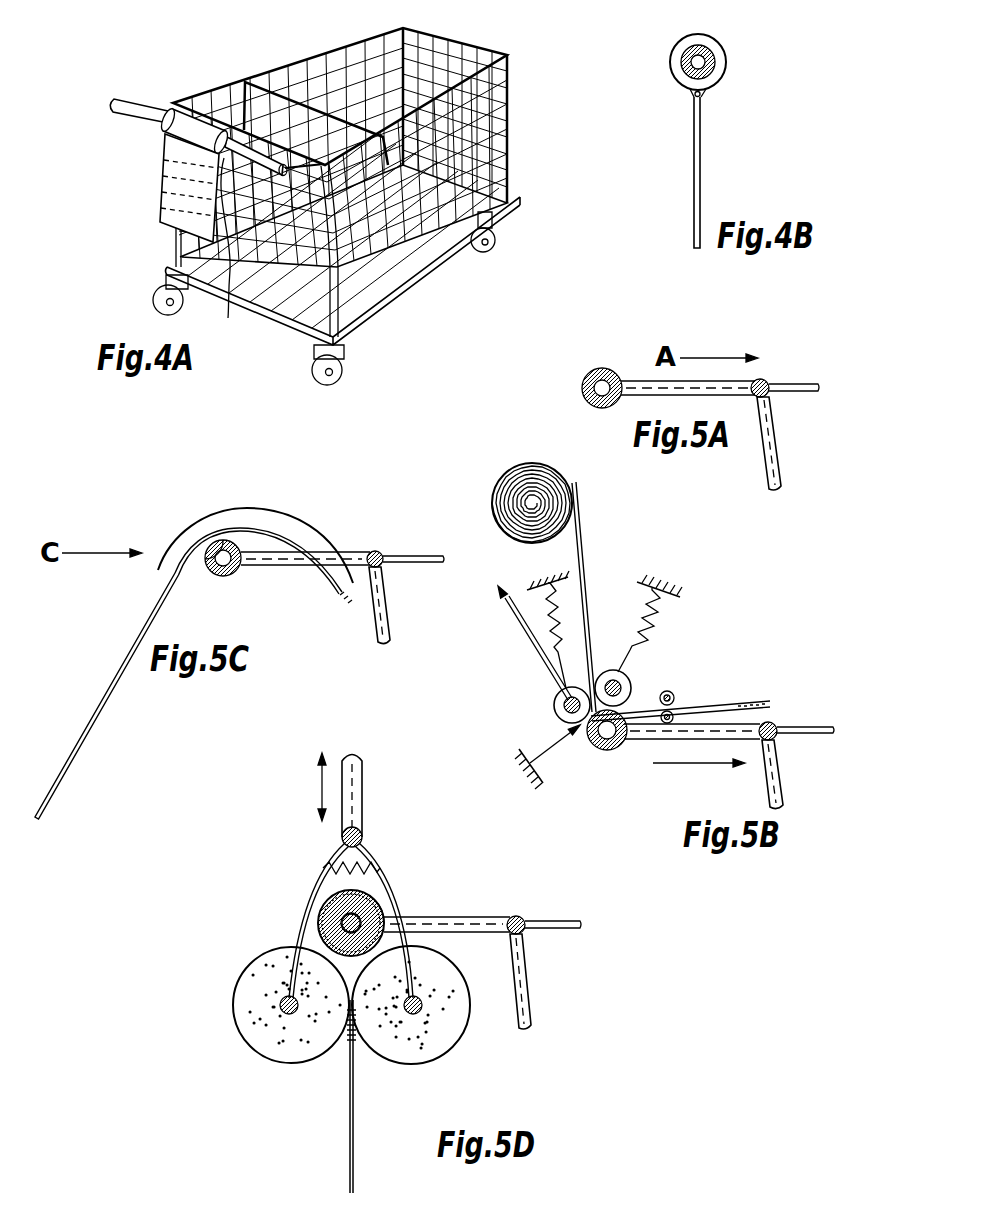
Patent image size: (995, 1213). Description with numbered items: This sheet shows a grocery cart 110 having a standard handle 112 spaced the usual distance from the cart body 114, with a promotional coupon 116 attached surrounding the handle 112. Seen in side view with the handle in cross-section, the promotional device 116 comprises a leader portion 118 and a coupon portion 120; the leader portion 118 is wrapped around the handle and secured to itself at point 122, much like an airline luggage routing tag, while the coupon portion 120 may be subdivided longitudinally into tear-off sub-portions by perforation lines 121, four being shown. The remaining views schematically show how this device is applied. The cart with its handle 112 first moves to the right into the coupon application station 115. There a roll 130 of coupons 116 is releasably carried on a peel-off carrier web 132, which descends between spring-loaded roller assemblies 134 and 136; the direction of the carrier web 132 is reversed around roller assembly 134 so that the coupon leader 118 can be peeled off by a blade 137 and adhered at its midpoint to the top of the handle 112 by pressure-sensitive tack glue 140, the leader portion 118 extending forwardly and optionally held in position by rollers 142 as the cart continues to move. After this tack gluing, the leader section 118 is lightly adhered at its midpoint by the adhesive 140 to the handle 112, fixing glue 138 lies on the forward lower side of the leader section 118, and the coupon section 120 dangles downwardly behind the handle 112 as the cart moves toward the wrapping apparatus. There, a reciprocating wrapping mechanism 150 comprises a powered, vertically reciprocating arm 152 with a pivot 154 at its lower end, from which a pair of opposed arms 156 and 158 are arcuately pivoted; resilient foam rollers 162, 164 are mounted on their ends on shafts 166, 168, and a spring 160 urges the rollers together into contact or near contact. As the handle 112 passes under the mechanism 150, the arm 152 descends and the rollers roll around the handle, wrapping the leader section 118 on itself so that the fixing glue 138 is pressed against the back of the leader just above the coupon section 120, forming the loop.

In FIG. 4A, the grocery cart 110 is at (488, 30).
In FIG. 4A, the handle 112 is at (110, 97).
In FIG. 4B, the handle 112 is at (712, 48).
In FIG. 5A, the handle 112 is at (588, 374).
In FIG. 5B, the handle 112 is at (608, 751).
In FIG. 5C, the handle 112 is at (225, 577).
In FIG. 5D, the handle 112 is at (318, 922).
In FIG. 4A, the cart body 114 is at (250, 68).
In FIG. 5A, the cart body 114 is at (775, 413).
In FIG. 5B, the cart body 114 is at (780, 751).
In FIG. 5C, the cart body 114 is at (388, 585).
In FIG. 5D, the cart body 114 is at (528, 946).
In FIG. 5B, the coupon application station 115 is at (624, 548).
In FIG. 4A, the promotional coupon 116 is at (156, 235).
In FIG. 4B, the promotional coupon 116 is at (743, 77).
In FIG. 4A, the leader portion 118 is at (166, 130).
In FIG. 4B, the leader portion 118 is at (663, 35).
In FIG. 5B, the leader portion 118 is at (693, 705).
In FIG. 5C, the leader portion 118 is at (247, 509).
In FIG. 4A, the coupon portion 120 is at (157, 148).
In FIG. 4B, the coupon portion 120 is at (683, 107).
In FIG. 5B, the coupon portion 120 is at (585, 545).
In FIG. 5C, the coupon portion 120 is at (160, 571).
In FIG. 5D, the coupon portion 120 is at (356, 1040).
In FIG. 4A, the perforation lines 121 is at (228, 306).
In FIG. 4B, the securing point 122 is at (703, 98).
In FIG. 5B, the roll of coupons 130 is at (497, 493).
In FIG. 5B, the peel-off carrier web 132 is at (537, 677).
In FIG. 5B, the spring-loaded roller assembly 134 is at (560, 632).
In FIG. 5B, the spring-loaded roller assembly 136 is at (645, 603).
In FIG. 5B, the blade 137 is at (550, 750).
In FIG. 5B, the fixing glue 138 is at (766, 709).
In FIG. 5C, the fixing glue 138 is at (340, 588).
In FIG. 5D, the fixing glue 138 is at (345, 1042).
In FIG. 5B, the pressure-sensitive glue 140 is at (587, 738).
In FIG. 5C, the pressure-sensitive glue 140 is at (193, 555).
In FIG. 5D, the pressure-sensitive glue 140 is at (378, 893).
In FIG. 5B, the rollers 142 is at (660, 690).
In FIG. 5D, the reciprocating wrapping mechanism 150 is at (355, 740).
In FIG. 5D, the vertically reciprocating arm 152 is at (362, 776).
In FIG. 5D, the pivot 154 is at (360, 828).
In FIG. 5D, the opposed arm 156 is at (410, 897).
In FIG. 5D, the opposed arm 158 is at (305, 900).
In FIG. 5D, the spring 160 is at (365, 865).
In FIG. 5D, the resilient foam roller 162 is at (415, 1061).
In FIG. 5D, the resilient foam roller 164 is at (273, 1063).
In FIG. 5D, the shaft 166 is at (420, 1008).
In FIG. 5D, the shaft 168 is at (280, 1007).